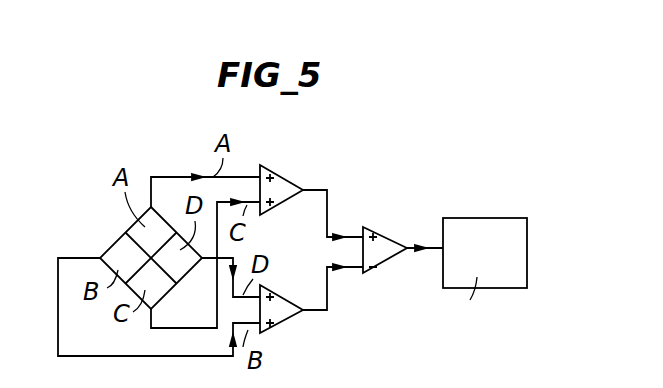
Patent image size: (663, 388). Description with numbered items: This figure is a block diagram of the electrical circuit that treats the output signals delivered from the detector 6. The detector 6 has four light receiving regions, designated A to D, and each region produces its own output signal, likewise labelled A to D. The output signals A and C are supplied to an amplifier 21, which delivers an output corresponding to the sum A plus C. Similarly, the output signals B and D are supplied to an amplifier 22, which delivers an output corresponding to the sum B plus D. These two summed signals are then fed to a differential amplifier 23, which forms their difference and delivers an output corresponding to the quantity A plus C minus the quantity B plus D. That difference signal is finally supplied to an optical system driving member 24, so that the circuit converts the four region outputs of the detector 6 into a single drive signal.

The detector 6 is at (108, 229).
The amplifier 21 is at (295, 192).
The amplifier 22 is at (288, 310).
The differential amplifier 23 is at (390, 240).
The optical system driving member 24 is at (477, 230).